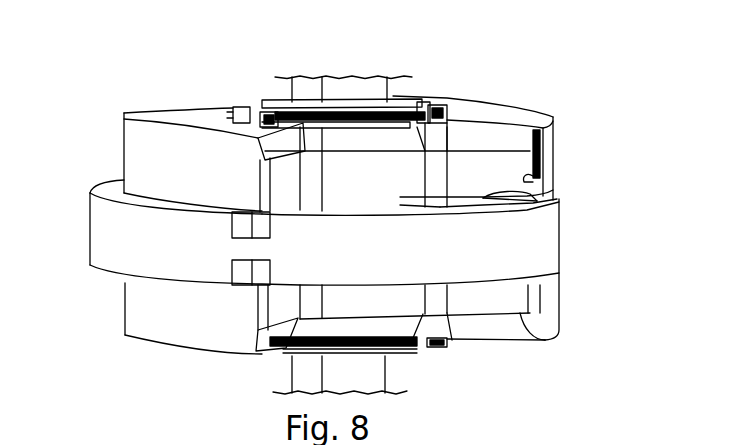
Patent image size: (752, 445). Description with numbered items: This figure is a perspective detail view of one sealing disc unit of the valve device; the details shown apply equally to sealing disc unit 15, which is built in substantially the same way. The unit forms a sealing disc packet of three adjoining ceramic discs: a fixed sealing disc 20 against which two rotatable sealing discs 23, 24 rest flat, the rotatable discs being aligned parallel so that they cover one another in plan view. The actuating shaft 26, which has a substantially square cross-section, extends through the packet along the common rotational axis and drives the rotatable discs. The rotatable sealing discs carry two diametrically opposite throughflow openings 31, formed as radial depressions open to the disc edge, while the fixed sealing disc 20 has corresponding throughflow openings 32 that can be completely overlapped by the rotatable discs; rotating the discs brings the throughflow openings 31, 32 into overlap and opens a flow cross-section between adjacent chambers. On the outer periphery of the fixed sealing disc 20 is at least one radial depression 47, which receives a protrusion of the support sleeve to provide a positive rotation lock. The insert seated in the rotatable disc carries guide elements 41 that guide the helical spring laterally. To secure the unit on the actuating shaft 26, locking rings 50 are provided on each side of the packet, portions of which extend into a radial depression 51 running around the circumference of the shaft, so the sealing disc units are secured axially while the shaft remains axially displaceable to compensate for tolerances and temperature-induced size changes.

The sealing disc unit 15 is at (98, 94).
The fixed sealing disc 20 is at (545, 249).
The rotatable sealing disc 23 is at (547, 140).
The rotatable sealing disc 24 is at (550, 313).
The actuating shaft 26 is at (347, 86).
The throughflow opening 31 is at (535, 179).
The throughflow opening 32 is at (553, 203).
The guide element 41 is at (268, 106).
The radial depression 47 is at (240, 225).
The locking ring 50 is at (402, 104).
The radial depression 51 is at (360, 100).